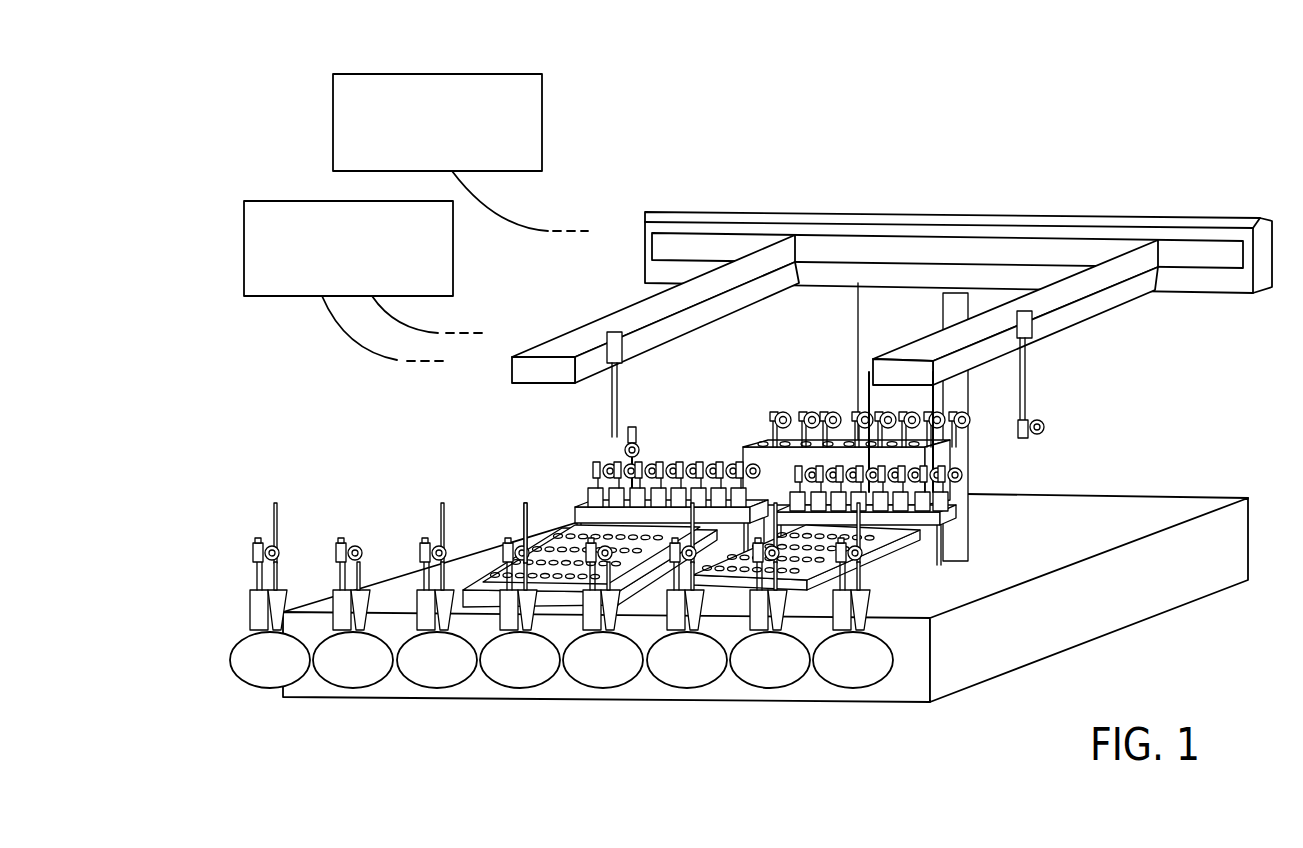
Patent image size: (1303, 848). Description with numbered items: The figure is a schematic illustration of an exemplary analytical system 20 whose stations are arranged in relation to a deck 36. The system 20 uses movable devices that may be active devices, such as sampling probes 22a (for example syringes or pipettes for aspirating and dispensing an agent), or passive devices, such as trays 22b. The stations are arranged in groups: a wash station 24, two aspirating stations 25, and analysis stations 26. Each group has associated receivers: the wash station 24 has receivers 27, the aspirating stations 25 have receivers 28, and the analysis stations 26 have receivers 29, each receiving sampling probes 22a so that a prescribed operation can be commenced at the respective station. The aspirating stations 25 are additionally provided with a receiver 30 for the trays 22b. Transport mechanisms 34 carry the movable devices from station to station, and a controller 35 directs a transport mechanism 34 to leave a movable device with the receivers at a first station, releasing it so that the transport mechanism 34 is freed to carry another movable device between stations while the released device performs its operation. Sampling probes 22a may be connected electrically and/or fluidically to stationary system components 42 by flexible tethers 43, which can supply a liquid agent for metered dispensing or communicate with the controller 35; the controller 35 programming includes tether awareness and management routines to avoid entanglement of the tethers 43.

The analytical system 20 is at (1105, 148).
The sampling probes 22a is at (633, 427).
The trays 22b is at (547, 525).
The wash station 24 is at (757, 440).
The aspirating stations 25 is at (583, 503).
The analysis stations 26 is at (262, 670).
The receivers 27 is at (787, 410).
The receivers 28 is at (697, 462).
The receivers 29 is at (360, 540).
The receiver 30 is at (478, 575).
The transport mechanism 34 is at (592, 325).
The controller 35 is at (398, 73).
The deck 36 is at (1183, 485).
The stationary system components 42 is at (277, 202).
The tethers 43 is at (345, 337).